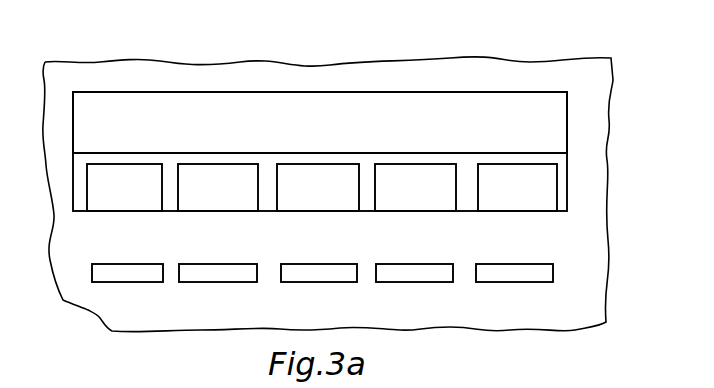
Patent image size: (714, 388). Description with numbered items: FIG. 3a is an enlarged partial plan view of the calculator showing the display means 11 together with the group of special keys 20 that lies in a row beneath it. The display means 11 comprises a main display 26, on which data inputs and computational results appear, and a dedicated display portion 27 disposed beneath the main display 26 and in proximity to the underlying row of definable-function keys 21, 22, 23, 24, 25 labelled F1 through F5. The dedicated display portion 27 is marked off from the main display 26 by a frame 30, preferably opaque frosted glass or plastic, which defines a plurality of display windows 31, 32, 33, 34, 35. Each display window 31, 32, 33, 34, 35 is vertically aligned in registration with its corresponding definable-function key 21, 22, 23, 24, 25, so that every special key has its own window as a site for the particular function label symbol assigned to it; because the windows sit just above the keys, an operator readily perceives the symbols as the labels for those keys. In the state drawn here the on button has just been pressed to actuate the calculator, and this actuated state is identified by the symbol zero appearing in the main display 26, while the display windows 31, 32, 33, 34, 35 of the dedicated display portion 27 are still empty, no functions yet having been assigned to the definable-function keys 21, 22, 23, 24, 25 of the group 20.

The display means 11 is at (91, 92).
The main display 26 is at (299, 99).
The dedicated display portion 27 is at (564, 154).
The frame 30 is at (376, 178).
The display window 31 is at (124, 187).
The display window 32 is at (218, 187).
The display window 33 is at (318, 187).
The display window 34 is at (415, 187).
The display window 35 is at (517, 187).
The group of special keys 20 is at (295, 295).
The definable-function key 21 is at (155, 283).
The definable-function key 22 is at (224, 277).
The definable-function key 23 is at (317, 277).
The definable-function key 24 is at (410, 277).
The definable-function key 25 is at (495, 277).